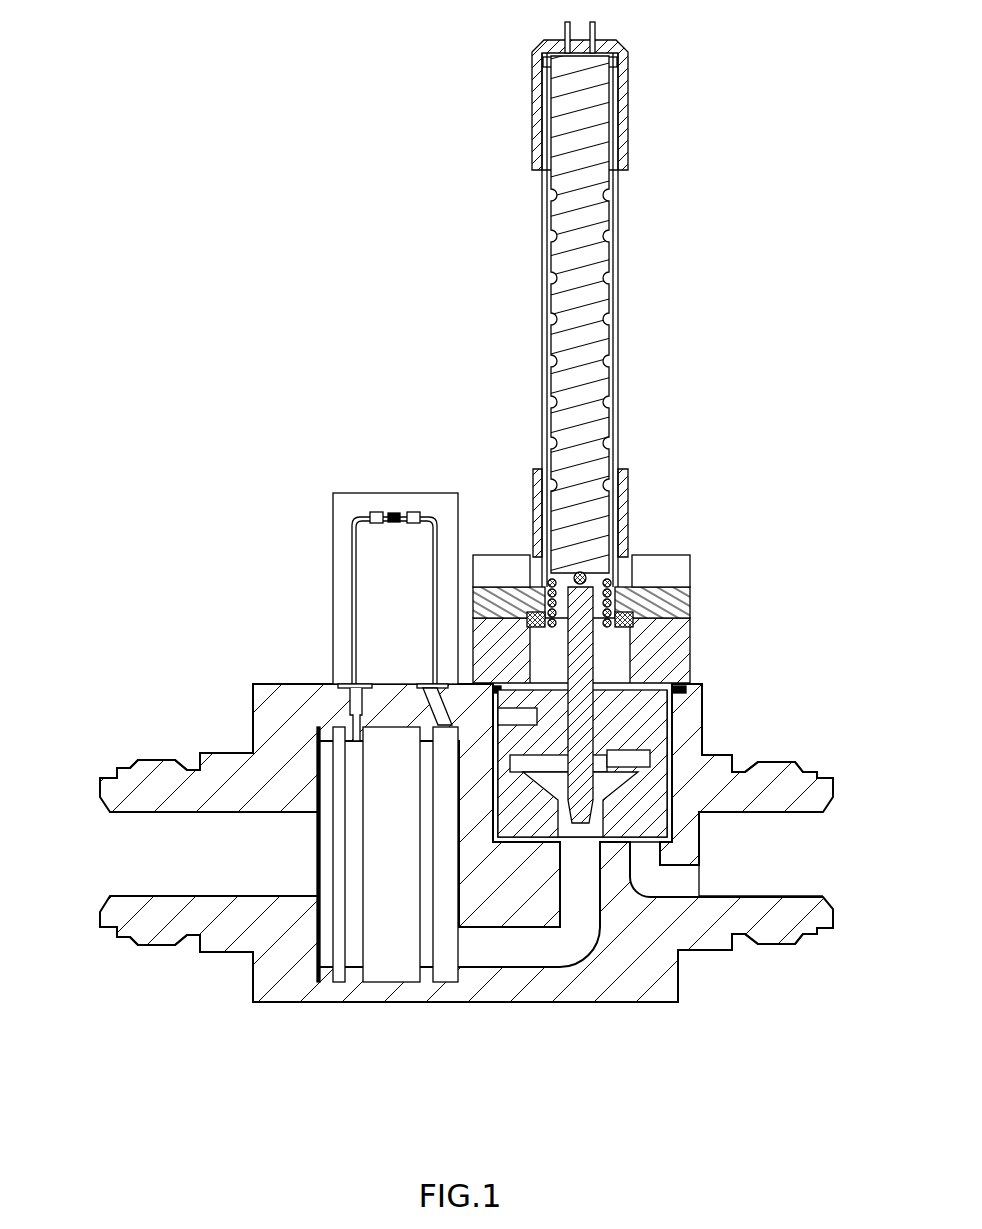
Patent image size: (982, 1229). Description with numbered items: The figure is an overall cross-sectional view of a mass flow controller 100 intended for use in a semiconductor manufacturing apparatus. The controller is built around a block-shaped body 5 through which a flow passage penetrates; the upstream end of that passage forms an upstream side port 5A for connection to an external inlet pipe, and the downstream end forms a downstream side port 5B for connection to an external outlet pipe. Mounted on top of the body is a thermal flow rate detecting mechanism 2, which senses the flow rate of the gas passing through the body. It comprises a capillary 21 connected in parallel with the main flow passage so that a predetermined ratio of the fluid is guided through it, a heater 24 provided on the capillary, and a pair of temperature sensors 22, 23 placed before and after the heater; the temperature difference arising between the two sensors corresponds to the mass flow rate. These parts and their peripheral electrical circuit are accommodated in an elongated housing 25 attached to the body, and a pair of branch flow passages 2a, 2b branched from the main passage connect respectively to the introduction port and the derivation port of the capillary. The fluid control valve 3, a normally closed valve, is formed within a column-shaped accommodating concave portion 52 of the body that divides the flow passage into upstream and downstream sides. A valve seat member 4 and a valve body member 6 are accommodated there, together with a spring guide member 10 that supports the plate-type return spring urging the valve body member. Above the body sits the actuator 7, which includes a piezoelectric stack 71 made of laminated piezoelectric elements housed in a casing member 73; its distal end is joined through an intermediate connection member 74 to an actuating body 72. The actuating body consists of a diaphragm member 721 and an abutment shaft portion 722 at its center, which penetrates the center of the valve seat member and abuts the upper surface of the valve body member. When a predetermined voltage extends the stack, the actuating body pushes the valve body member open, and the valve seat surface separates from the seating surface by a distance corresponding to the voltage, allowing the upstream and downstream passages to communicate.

The mass flow controller 100 is at (327, 280).
The flow rate detecting mechanism 2 is at (330, 490).
The capillary 21 is at (352, 557).
The temperature sensor 22 is at (375, 512).
The temperature sensor 23 is at (412, 512).
The heater 24 is at (394, 512).
The housing 25 is at (333, 600).
The branch flow passage 2a is at (340, 688).
The branch flow passage 2b is at (432, 690).
The fluid control valve 3 is at (700, 580).
The valve seat member 4 is at (497, 732).
The valve body member 6 is at (497, 787).
The spring guide member 10 is at (497, 820).
The body 5 is at (467, 1002).
The upstream side port 5A is at (107, 778).
The downstream side port 5B is at (830, 778).
The accommodating concave portion 52 is at (668, 832).
The actuator 7 is at (668, 357).
The piezoelectric stack 71 is at (618, 400).
The casing member 73 is at (584, 576).
The intermediate connection member 74 is at (621, 283).
The actuating body 72 is at (740, 623).
The diaphragm member 721 is at (598, 668).
The abutment shaft portion 722 is at (598, 722).